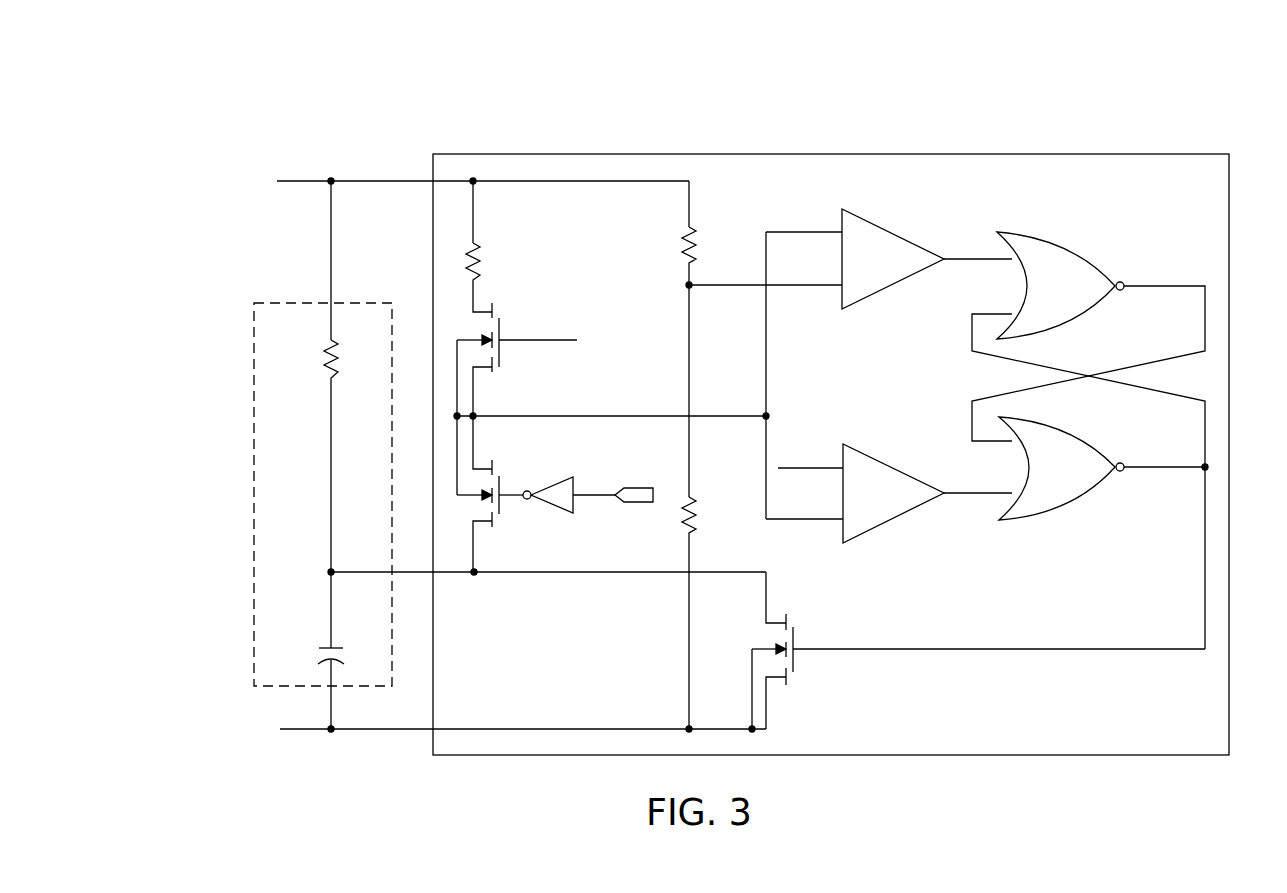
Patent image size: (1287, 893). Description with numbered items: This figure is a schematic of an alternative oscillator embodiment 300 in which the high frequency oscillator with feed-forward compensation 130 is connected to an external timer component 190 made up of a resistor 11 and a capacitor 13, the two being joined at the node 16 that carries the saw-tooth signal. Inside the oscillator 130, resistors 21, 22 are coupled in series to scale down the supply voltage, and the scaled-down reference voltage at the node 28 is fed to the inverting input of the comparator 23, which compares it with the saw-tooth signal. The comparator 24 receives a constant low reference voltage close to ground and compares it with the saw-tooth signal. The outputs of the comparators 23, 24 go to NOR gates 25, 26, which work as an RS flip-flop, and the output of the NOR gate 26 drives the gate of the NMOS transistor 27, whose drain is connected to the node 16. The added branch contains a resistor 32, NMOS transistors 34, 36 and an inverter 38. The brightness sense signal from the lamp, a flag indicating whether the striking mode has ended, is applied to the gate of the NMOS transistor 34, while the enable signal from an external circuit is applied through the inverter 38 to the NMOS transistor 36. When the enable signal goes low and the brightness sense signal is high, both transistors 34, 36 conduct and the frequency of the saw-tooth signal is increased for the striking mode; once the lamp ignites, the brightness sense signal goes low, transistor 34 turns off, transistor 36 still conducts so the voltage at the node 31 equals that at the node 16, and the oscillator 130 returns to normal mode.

The embodiment of an oscillator 300 is at (286, 127).
The high frequency oscillator with feed-forward compensation 130 is at (833, 153).
The timer component 190 is at (365, 303).
The resistor 11 is at (336, 354).
The capacitor 13 is at (338, 658).
The node 16 is at (332, 570).
The resistor 21 is at (697, 240).
The resistor 22 is at (697, 513).
The comparator 23 is at (897, 239).
The comparator 24 is at (899, 475).
The NOR gate 25 is at (1079, 257).
The NOR gate 26 is at (1079, 438).
The NMOS transistor 27 is at (798, 631).
The node 28 is at (686, 290).
The node 31 is at (477, 421).
The resistor 32 is at (481, 262).
The NMOS transistor 34 is at (503, 332).
The NMOS transistor 36 is at (505, 487).
The inverter 38 is at (553, 513).